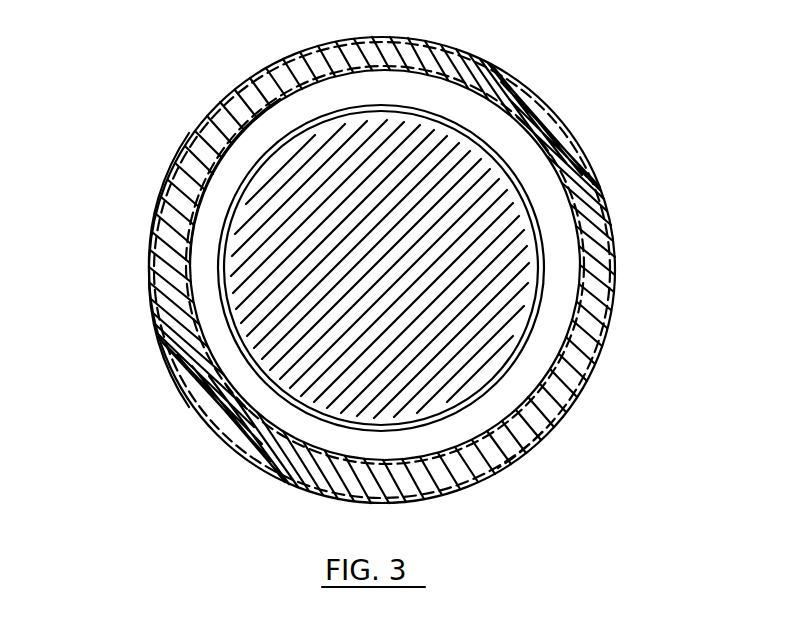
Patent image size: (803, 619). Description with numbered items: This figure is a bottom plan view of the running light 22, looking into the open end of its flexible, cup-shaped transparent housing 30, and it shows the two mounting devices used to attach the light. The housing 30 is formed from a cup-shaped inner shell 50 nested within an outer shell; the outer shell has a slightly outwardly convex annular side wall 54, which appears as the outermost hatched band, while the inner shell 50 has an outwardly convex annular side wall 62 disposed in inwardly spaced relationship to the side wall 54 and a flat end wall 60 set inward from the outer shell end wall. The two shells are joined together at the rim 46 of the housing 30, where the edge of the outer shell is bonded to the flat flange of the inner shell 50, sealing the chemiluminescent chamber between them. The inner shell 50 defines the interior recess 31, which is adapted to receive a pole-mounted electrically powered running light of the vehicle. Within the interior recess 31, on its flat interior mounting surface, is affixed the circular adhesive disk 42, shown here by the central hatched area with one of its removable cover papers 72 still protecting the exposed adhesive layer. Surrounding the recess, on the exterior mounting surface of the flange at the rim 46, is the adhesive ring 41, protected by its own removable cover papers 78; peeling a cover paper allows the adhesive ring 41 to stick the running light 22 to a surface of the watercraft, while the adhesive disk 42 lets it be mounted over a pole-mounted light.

The running light 22 is at (596, 72).
The housing 30 is at (616, 187).
The rim 46 is at (158, 190).
The adhesive ring 41 is at (146, 320).
The side wall 54 is at (237, 448).
The side wall 62 is at (541, 400).
The end wall 60 is at (252, 155).
The inner shell 50 is at (438, 112).
The interior recess 31 is at (221, 331).
The adhesive disk 42 is at (534, 277).
The cover papers 72 is at (488, 324).
The cover papers 78 is at (516, 437).